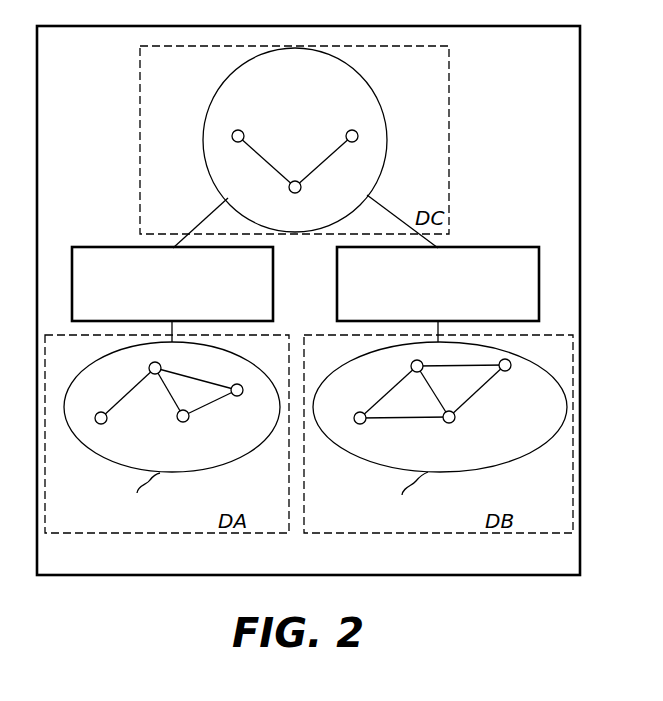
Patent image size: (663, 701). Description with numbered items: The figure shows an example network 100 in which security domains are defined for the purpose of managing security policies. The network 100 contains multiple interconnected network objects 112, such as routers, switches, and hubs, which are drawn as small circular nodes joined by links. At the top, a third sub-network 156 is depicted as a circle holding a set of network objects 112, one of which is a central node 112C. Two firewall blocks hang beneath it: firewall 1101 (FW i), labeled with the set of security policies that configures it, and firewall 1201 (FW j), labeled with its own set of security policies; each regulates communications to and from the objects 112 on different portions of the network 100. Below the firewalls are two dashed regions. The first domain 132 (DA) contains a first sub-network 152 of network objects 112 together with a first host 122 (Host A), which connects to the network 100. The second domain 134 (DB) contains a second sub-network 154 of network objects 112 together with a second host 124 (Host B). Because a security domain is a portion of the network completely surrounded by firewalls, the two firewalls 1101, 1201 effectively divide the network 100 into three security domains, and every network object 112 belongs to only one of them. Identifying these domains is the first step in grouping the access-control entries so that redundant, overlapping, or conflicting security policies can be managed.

The network 100 is at (548, 571).
The network objects 112 is at (347, 133).
The central service provider node 112C is at (297, 193).
The third sub-network 156 is at (370, 181).
The firewall i 1101 is at (263, 275).
The firewall j 1201 is at (532, 275).
The first sub-network 152 is at (250, 435).
The second sub-network 154 is at (458, 458).
The first domain 132 is at (95, 530).
The second domain 134 is at (362, 531).
The first host 122 is at (125, 522).
The second host 124 is at (392, 522).